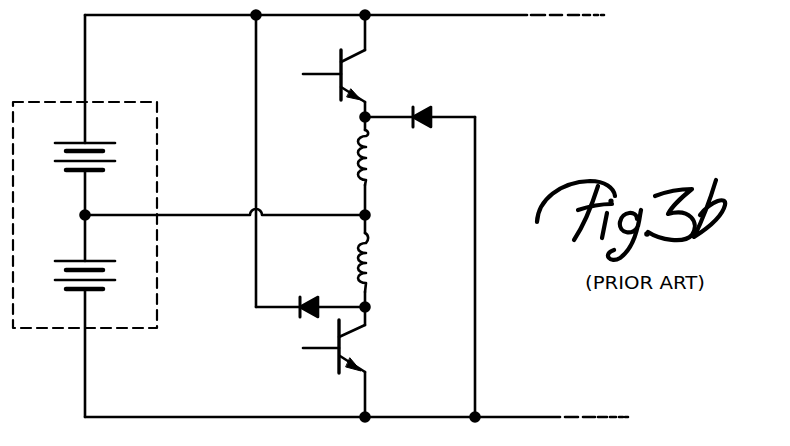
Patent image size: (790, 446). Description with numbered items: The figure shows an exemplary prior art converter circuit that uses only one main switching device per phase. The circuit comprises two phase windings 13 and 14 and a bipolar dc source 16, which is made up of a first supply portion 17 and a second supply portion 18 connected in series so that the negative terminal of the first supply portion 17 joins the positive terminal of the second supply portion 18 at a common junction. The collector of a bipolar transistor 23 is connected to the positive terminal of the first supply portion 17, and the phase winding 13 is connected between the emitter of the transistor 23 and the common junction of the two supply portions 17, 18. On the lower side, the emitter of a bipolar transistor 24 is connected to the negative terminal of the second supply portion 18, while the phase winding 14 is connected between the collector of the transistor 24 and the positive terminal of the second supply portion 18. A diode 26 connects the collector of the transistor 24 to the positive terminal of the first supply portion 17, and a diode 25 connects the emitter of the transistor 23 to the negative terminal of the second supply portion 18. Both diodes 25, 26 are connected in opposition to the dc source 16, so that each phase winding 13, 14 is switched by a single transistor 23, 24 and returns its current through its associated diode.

The phase winding 13 is at (371, 150).
The phase winding 14 is at (371, 246).
The bipolar dc source 16 is at (52, 105).
The first supply portion 17 is at (68, 166).
The second supply portion 18 is at (72, 259).
The bipolar transistor 23 is at (356, 72).
The bipolar transistor 24 is at (352, 347).
The diode 25 is at (432, 112).
The diode 26 is at (312, 300).